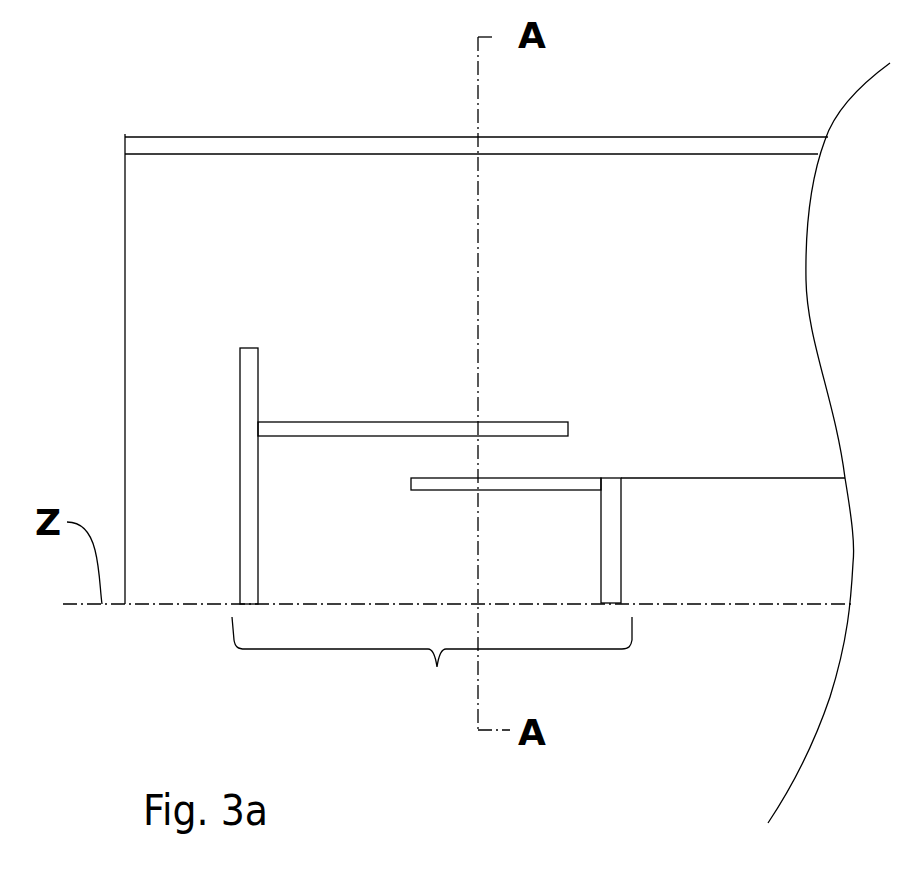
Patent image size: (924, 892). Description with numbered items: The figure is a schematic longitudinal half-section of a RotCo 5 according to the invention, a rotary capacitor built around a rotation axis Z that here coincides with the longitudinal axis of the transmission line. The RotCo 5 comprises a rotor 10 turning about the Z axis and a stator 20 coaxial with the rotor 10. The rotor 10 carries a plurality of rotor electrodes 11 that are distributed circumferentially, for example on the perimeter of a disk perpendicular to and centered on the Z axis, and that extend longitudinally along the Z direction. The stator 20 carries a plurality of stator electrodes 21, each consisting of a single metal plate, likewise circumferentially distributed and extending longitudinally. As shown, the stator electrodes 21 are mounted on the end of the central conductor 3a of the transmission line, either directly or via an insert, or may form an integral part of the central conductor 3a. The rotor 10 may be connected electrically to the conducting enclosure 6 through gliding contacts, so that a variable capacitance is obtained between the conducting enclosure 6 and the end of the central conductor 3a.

The conducting enclosure 6 is at (632, 143).
The rotor electrode 11 is at (317, 425).
The rotor 10 is at (240, 381).
The stator electrode 21 is at (527, 489).
The stator 20 is at (615, 545).
The central conductor 3a is at (710, 478).
The RotCo 5 is at (437, 667).